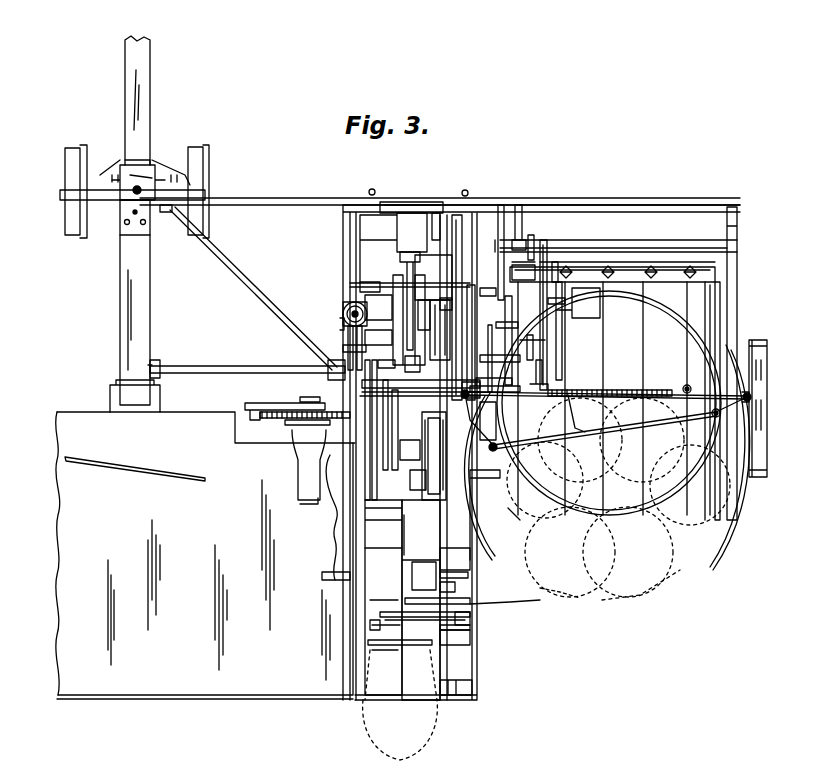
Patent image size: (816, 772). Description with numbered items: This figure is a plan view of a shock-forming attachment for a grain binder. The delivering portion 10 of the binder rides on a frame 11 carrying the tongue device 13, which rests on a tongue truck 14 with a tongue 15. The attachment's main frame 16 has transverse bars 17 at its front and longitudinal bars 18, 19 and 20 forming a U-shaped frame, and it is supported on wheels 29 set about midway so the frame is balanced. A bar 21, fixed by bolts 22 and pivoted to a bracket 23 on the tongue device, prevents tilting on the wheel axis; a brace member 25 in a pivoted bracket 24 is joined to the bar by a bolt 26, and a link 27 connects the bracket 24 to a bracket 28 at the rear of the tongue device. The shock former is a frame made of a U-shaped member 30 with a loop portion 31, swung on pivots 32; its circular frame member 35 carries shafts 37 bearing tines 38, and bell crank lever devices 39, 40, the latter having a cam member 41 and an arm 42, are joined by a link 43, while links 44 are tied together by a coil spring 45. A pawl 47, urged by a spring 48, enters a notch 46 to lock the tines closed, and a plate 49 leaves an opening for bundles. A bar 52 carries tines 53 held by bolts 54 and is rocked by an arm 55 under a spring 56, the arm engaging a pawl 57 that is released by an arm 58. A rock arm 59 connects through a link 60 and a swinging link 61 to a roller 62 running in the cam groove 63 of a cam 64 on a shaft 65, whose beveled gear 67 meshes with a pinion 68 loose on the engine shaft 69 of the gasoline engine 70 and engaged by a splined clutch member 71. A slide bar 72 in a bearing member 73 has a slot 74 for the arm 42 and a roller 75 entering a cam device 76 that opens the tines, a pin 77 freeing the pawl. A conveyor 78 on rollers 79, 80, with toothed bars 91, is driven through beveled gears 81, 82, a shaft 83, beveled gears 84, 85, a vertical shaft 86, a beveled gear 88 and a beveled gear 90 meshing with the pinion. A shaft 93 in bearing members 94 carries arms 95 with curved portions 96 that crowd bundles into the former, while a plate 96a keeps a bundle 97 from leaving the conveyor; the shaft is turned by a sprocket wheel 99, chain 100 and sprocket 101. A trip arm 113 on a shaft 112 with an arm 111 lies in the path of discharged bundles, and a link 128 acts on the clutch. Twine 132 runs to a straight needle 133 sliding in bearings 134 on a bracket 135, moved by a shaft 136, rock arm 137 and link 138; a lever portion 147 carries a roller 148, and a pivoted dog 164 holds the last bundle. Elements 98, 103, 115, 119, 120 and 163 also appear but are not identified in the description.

The delivering portion of grain binder 10 is at (205, 555).
The frame 11 is at (160, 405).
The tongue device 13 is at (150, 297).
The tongue truck 14 is at (105, 192).
The tongue 15 is at (150, 128).
The main frame 16 is at (740, 210).
The transversely arranged bars 17 is at (640, 228).
The longitudinally arranged bar 18 is at (738, 275).
The longitudinally arranged bar 19 is at (470, 660).
The longitudinally arranged bar 20 is at (343, 292).
The bar 21 is at (290, 197).
The bolts 22 is at (365, 192).
The bracket 23 is at (125, 228).
The pivoted bracket 24 is at (343, 349).
The brace member 25 is at (245, 276).
The bolt 26 is at (165, 212).
The link 27 is at (235, 365).
The bracket 28 is at (168, 362).
The wheels 29 is at (767, 392).
The U-shaped member 30 is at (618, 497).
The loop portion 31 is at (712, 308).
The pivots 32 is at (720, 512).
The circular frame member 35 is at (615, 300).
The shafts 37 is at (540, 395).
The tines 38 is at (712, 418).
The bell crank lever device 39 is at (688, 384).
The bell crank lever device 40 is at (520, 448).
The cam member 41 is at (495, 375).
The arm 42 is at (506, 419).
The link 43 is at (600, 432).
The links 44 is at (758, 375).
The coil spring 45 is at (618, 392).
The notch 46 is at (542, 372).
The pawl 47 is at (486, 358).
The spring 48 is at (564, 325).
The plate 49 is at (507, 340).
The bar 52 is at (635, 268).
The tines 53 is at (604, 335).
The bolts 54 is at (675, 268).
The arm 55 is at (627, 258).
The spring 56 is at (508, 293).
The pawl 57 is at (555, 262).
The arm 58 is at (504, 268).
The rock arm 59 is at (500, 460).
The link 60 is at (440, 268).
The swinging link 61 is at (470, 235).
The roller 62 is at (462, 226).
The cam groove 63 is at (504, 202).
The cam 64 is at (476, 305).
The shaft 65 is at (440, 284).
The beveled gear 67 is at (406, 290).
The pinion 68 is at (376, 357).
The engine shaft 69 is at (408, 268).
The gasoline engine 70 is at (393, 248).
The splined clutch member 71 is at (394, 333).
The slide bar 72 is at (547, 250).
The bearing member 73 is at (578, 303).
The slot 74 is at (489, 421).
The roller 75 is at (534, 237).
The cam device 76 is at (526, 200).
The pin 77 is at (534, 350).
The conveyor 78 is at (440, 700).
The roller 79 is at (383, 597).
The roller 80 is at (410, 488).
The beveled gear 81 is at (364, 430).
The beveled gear 82 is at (330, 506).
The shaft 83 is at (340, 398).
The beveled gear 84 is at (340, 320).
The beveled gear 85 is at (345, 305).
The vertically arranged shaft 86 is at (340, 314).
The beveled gear 88 is at (365, 282).
The beveled gear 90 is at (378, 307).
The bars 91 is at (432, 530).
The shaft 93 is at (456, 586).
The bearing members 94 is at (424, 576).
The arms 95 is at (455, 596).
The curved portions 96 is at (470, 574).
The plate 96a is at (470, 627).
The bundle 97 is at (400, 705).
The bar 98 is at (470, 614).
The sprocket wheel 99 is at (500, 353).
The chain 100 is at (446, 330).
The sprocket 101 is at (315, 363).
The pivot block 103 is at (475, 393).
The arm 111 is at (297, 405).
The shaft 112 is at (335, 548).
The trip arm 113 is at (350, 600).
The block 115 is at (398, 359).
The arm 119 is at (534, 516).
The housing 120 is at (446, 420).
The link 128 is at (420, 391).
The twine 132 is at (637, 595).
The needle 133 is at (510, 597).
The bearings 134 is at (557, 587).
The bracket 135 is at (437, 596).
The shaft 136 is at (383, 619).
The rock arm 137 is at (405, 640).
The link 138 is at (503, 616).
The right angularly extending lever portion 147 is at (410, 418).
The roller 148 is at (420, 446).
The bar 163 is at (612, 232).
The pivoted dog 164 is at (546, 340).